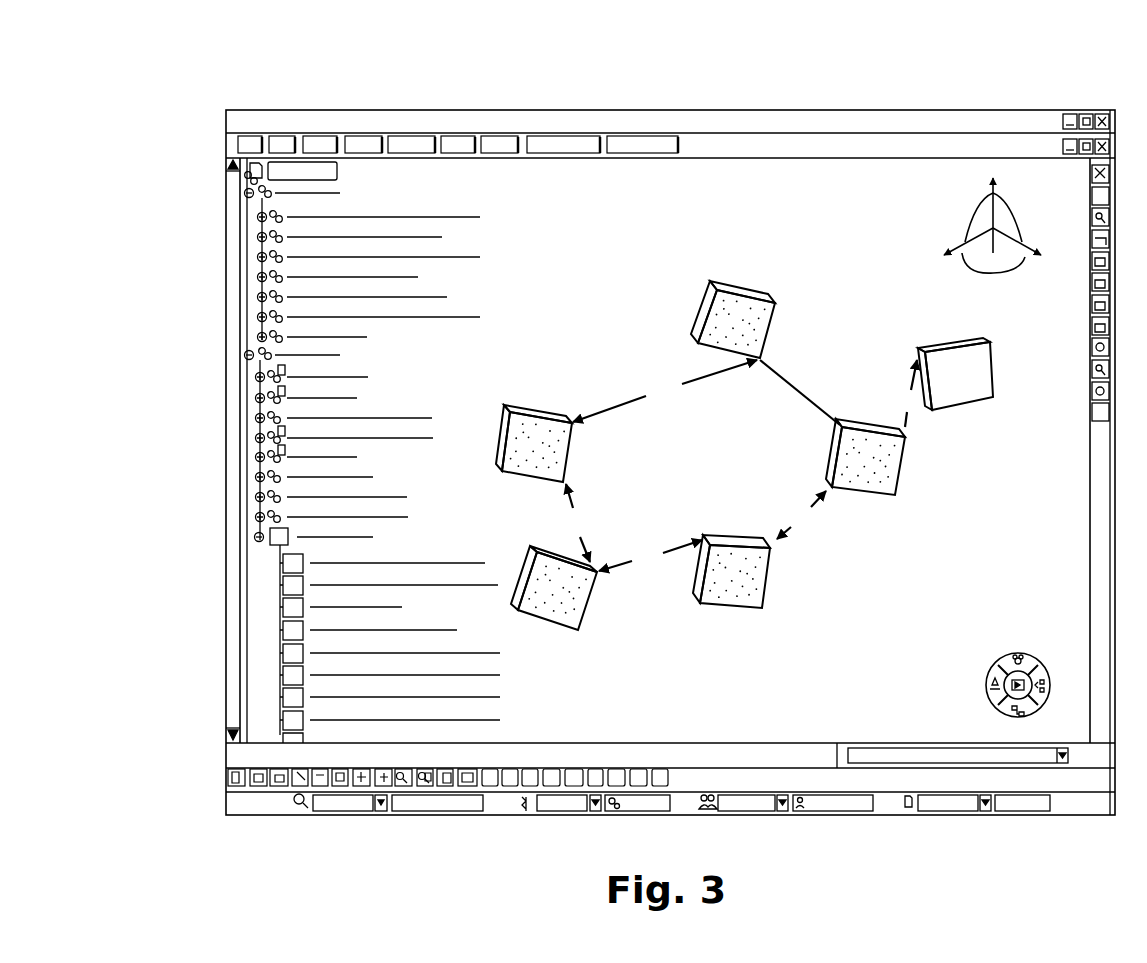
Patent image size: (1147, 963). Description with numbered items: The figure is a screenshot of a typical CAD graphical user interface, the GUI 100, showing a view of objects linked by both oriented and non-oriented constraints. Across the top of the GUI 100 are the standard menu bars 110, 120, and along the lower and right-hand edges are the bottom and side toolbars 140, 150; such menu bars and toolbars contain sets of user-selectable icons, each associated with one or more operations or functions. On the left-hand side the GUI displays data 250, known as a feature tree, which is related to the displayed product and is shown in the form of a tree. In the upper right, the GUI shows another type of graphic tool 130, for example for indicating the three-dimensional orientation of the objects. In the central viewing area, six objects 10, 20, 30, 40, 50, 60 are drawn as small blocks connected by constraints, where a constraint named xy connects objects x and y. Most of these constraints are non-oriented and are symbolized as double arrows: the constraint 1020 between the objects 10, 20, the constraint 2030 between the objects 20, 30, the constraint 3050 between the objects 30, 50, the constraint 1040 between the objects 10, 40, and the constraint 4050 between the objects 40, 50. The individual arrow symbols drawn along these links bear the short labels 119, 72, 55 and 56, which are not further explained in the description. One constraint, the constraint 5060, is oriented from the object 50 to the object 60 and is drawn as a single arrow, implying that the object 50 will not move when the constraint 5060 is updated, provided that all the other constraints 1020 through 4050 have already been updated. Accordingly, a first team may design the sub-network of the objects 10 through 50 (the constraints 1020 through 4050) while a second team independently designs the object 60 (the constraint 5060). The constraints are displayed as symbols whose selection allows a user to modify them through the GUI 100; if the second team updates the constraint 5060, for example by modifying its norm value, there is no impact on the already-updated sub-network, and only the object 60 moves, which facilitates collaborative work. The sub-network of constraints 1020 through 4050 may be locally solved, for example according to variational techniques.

The GUI 100 is at (925, 670).
The menu bar 110 is at (781, 118).
The menu bar 120 is at (866, 148).
The graphic tool 130 is at (1007, 265).
The bottom toolbar 140 is at (681, 748).
The side toolbar 150 is at (1097, 443).
The data (feature tree) 250 is at (362, 430).
The object 10 is at (523, 460).
The object 20 is at (543, 603).
The object 30 is at (717, 590).
The object 40 is at (722, 338).
The object 50 is at (854, 475).
The object 60 is at (944, 388).
The link between objects 10 and 40 119 is at (587, 357).
The link between objects 50 and 60 56 is at (905, 393).
The link between objects 20 and 30 72 is at (650, 556).
The link between objects 30 and 50 55 is at (801, 515).
The non-oriented constraint 1040 is at (657, 376).
The non-oriented constraint 4050 is at (790, 383).
The oriented constraint 5060 is at (934, 438).
The non-oriented constraint 1020 is at (562, 505).
The non-oriented constraint 2030 is at (650, 596).
The non-oriented constraint 3050 is at (833, 531).